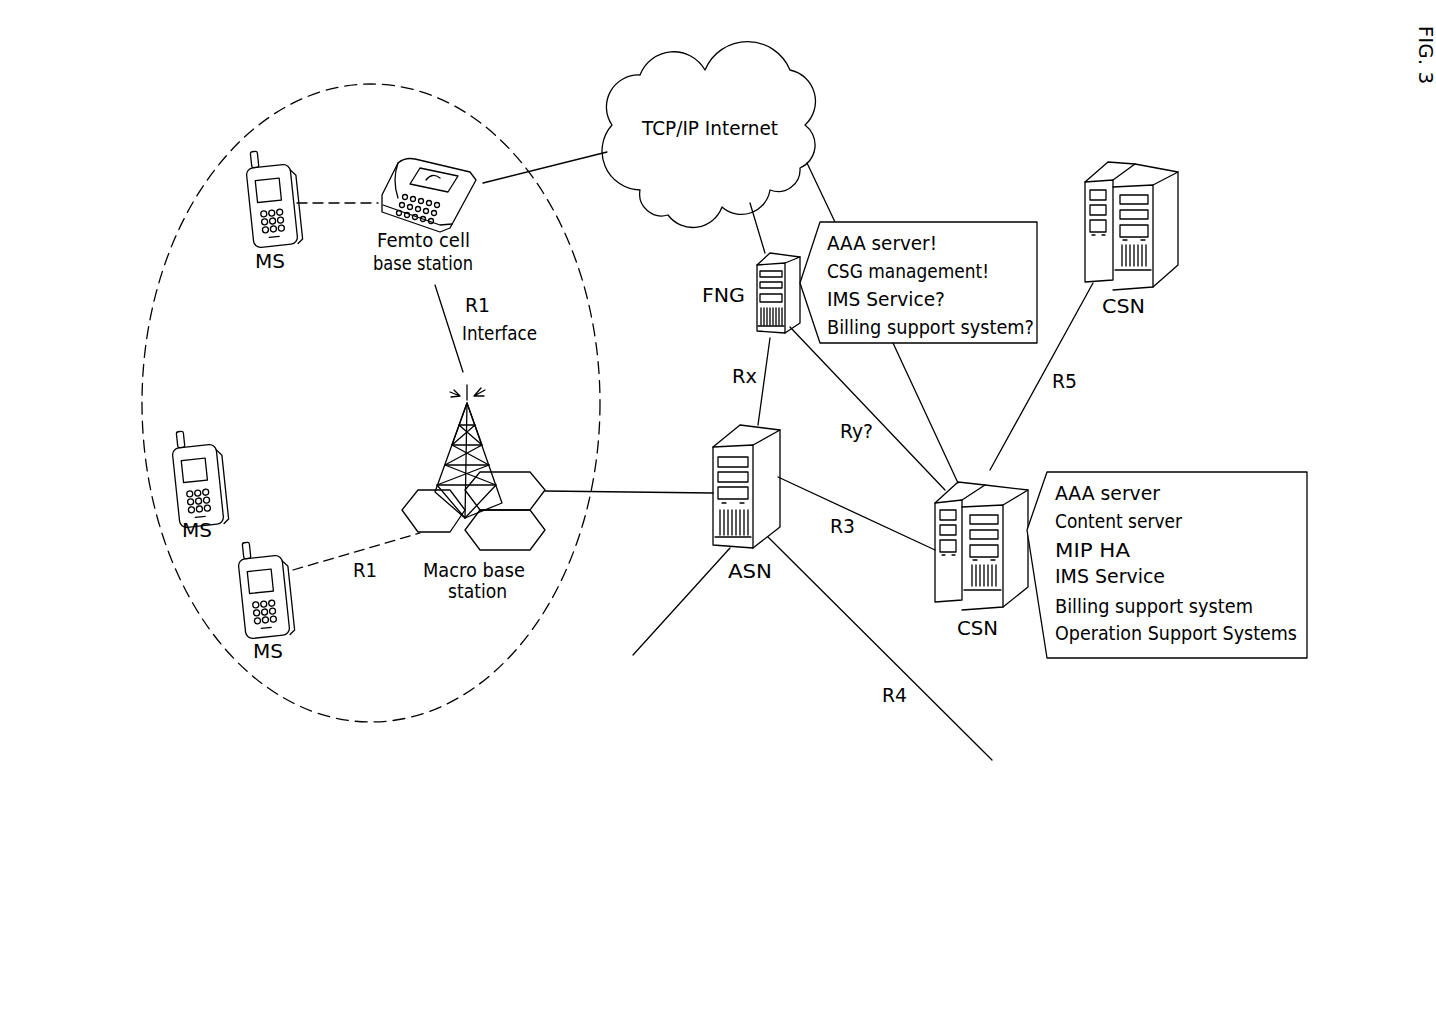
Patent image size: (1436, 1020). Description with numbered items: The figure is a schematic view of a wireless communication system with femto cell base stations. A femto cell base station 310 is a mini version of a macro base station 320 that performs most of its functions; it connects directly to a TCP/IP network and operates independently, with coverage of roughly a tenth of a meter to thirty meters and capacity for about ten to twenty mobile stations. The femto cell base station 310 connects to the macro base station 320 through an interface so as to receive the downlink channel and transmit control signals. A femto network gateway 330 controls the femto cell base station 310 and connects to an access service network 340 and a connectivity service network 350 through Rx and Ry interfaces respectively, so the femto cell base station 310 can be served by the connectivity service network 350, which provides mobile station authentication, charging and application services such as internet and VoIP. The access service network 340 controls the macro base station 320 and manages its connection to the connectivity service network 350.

The femto cell base station 310 is at (441, 166).
The macro base station 320 is at (494, 449).
The femto network gateway (FNG) 330 is at (784, 247).
The access service network (ASN) 340 is at (733, 437).
The connectivity service network (CSN) 350 is at (1002, 490).